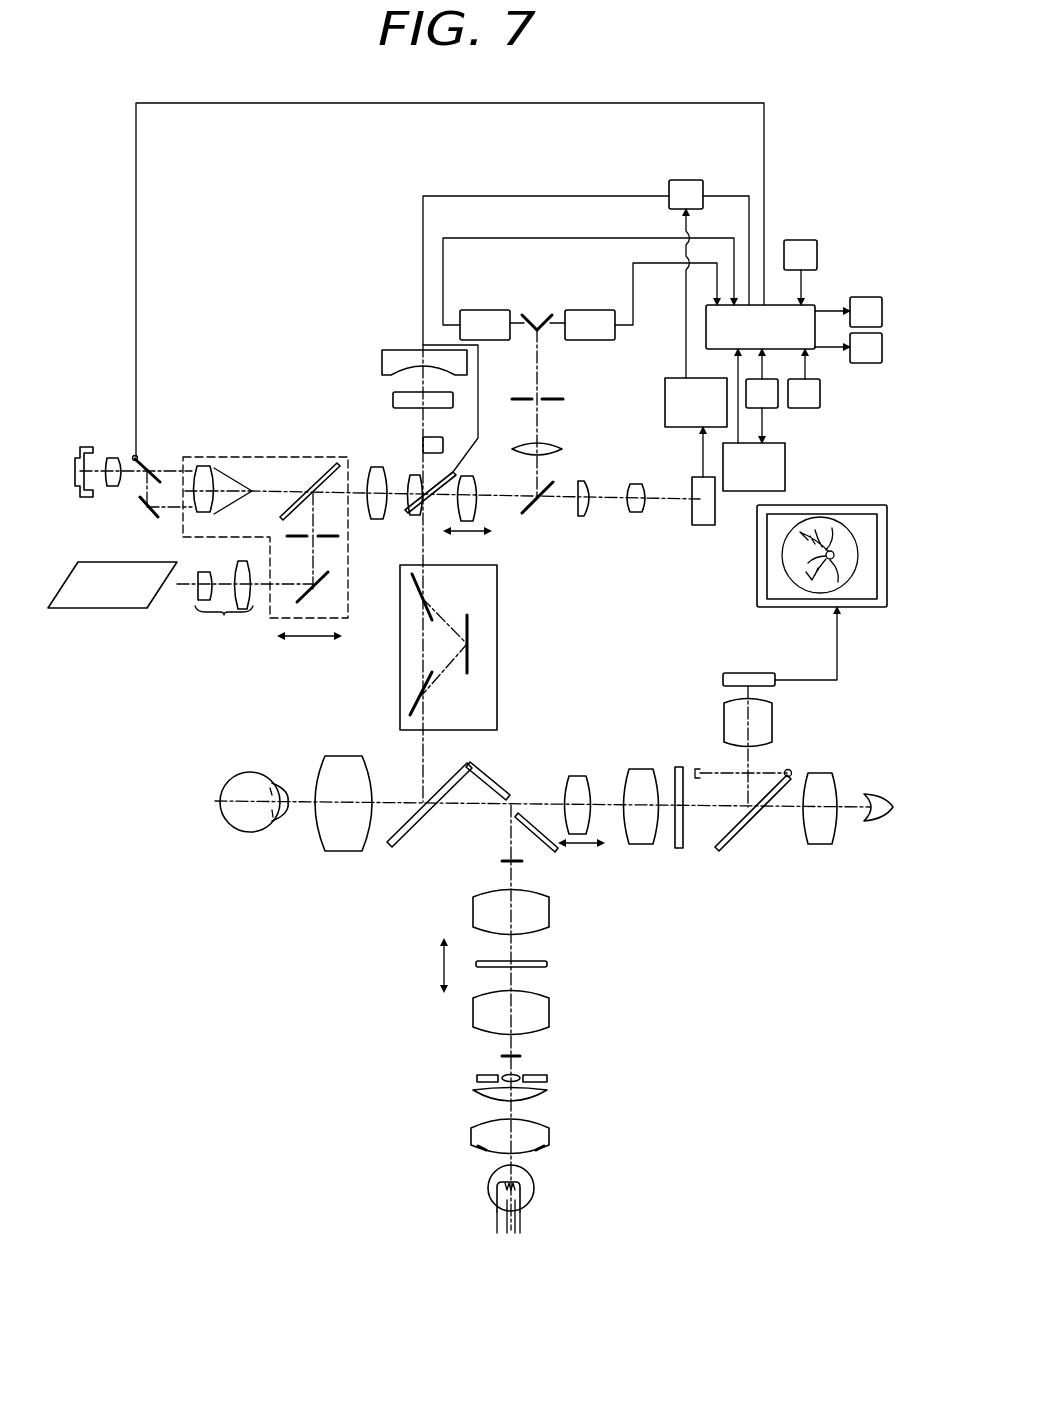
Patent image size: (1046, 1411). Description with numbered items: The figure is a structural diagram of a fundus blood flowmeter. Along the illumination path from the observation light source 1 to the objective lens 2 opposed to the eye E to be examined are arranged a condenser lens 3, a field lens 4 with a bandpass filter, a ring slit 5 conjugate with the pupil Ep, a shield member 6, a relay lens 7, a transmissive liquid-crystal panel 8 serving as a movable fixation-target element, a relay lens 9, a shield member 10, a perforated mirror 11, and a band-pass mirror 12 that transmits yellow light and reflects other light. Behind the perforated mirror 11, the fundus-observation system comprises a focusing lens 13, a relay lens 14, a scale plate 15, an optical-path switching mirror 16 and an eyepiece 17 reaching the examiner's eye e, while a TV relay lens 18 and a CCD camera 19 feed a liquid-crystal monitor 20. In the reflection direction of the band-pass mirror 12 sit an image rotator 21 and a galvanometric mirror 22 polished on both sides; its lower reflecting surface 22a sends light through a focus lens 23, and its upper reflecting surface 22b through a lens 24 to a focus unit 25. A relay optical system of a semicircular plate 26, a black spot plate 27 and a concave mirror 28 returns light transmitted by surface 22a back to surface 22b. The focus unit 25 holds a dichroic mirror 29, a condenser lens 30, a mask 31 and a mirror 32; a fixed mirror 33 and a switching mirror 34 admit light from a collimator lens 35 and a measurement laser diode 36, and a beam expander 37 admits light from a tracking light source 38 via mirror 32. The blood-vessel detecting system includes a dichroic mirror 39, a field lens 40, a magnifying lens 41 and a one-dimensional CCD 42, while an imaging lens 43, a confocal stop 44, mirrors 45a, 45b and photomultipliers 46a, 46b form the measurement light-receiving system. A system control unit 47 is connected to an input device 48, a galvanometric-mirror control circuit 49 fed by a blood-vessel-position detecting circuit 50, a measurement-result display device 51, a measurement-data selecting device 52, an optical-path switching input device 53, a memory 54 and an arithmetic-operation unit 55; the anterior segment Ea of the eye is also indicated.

The observation light source 1 is at (534, 1190).
The objective lens 2 is at (343, 851).
The condenser lens 3 is at (550, 1133).
The field lens 4 is at (472, 1090).
The ring slit 5 is at (548, 1079).
The shield member 6 is at (520, 1055).
The relay lens 7 is at (550, 1012).
The transmissive liquid-crystal panel 8 is at (548, 964).
The relay lens 9 is at (550, 912).
The shield member 10 is at (524, 862).
The perforated mirror 11 is at (492, 764).
The band-pass mirror 12 is at (391, 841).
The focusing lens 13 is at (576, 776).
The relay lens 14 is at (641, 769).
The scale plate 15 is at (679, 848).
The optical-path switching mirror 16 is at (718, 848).
The eyepiece 17 is at (820, 845).
The TV relay lens 18 is at (724, 717).
The CCD camera 19 is at (723, 680).
The liquid-crystal monitor 20 is at (877, 607).
The image rotator 21 is at (497, 634).
The galvanometric mirror 22 is at (462, 478).
The lower reflecting surface 22a is at (411, 512).
The upper reflecting surface 22b is at (408, 478).
The focus lens 23 is at (478, 515).
The lens 24 is at (368, 465).
The focus unit 25 is at (276, 618).
The optical-path-length-compensating semicircular plate 26 is at (443, 446).
The black spot plate 27 is at (390, 398).
The concave mirror 28 is at (404, 350).
The dichroic mirror 29 is at (318, 474).
The condenser lens 30 is at (196, 510).
The mask 31 is at (335, 540).
The mirror 32 is at (322, 580).
The fixed mirror 33 is at (142, 507).
The optical-path switching mirror 34 is at (152, 466).
The collimator lens 35 is at (113, 456).
The laser diode 36 is at (78, 446).
The beam expander 37 is at (224, 606).
The tracking light source 38 is at (118, 608).
The dichroic mirror 39 is at (536, 500).
The field lens 40 is at (587, 517).
The magnifying lens 41 is at (634, 514).
The one-dimensional CCD 42 is at (705, 525).
The imaging lens 43 is at (563, 449).
The confocal stop 44 is at (562, 400).
The mirror 45a is at (522, 314).
The mirror 45b is at (552, 314).
The photomultiplier 46a is at (500, 340).
The photomultiplier 46b is at (602, 340).
The system control unit 47 is at (815, 352).
The input device 48 is at (808, 240).
The galvanometric-mirror control circuit 49 is at (690, 180).
The blood-vessel-position detecting circuit 50 is at (665, 427).
The measurement-result display device 51 is at (866, 297).
The measurement-data selecting device 52 is at (870, 363).
The optical-path switching input device 53 is at (812, 408).
The memory 54 is at (772, 408).
The arithmetic-operation unit 55 is at (745, 492).
The eye to be examined E is at (235, 815).
The anterior segment of eye Ea is at (222, 790).
The pupil Ep is at (270, 792).
The examiner's eye e is at (870, 821).